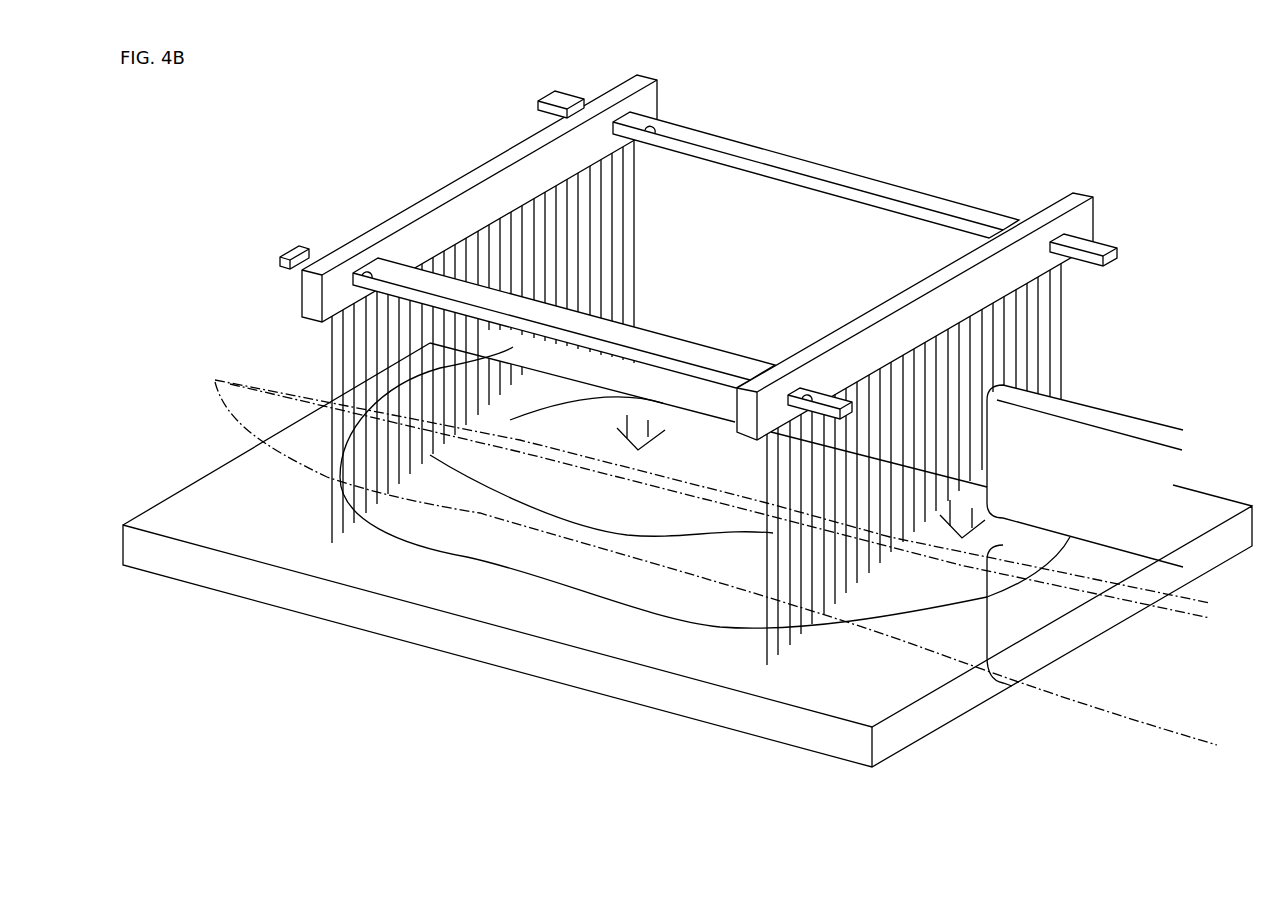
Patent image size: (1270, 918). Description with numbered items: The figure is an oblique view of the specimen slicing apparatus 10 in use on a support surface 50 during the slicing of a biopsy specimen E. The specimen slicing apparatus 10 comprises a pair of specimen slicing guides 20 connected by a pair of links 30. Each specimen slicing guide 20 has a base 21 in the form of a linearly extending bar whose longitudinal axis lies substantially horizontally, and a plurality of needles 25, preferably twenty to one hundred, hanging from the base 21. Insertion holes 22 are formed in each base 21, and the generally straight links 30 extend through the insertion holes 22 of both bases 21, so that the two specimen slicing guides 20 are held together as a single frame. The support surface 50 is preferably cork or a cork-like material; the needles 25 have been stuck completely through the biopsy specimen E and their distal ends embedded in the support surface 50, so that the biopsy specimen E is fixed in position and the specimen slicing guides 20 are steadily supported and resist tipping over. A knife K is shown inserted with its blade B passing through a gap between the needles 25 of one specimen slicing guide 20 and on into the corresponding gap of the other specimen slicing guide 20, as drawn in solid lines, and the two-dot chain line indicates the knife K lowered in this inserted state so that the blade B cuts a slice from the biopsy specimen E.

The specimen slicing apparatus 10 is at (709, 255).
The specimen slicing guide 20 is at (663, 250).
The base 21 is at (462, 178).
The insertion hole 22 is at (380, 268).
The needle 25 is at (392, 320).
The link 30 is at (835, 176).
The support surface 50 is at (200, 513).
The blade B is at (513, 347).
The biopsy specimen E is at (557, 558).
The knife K is at (1003, 527).